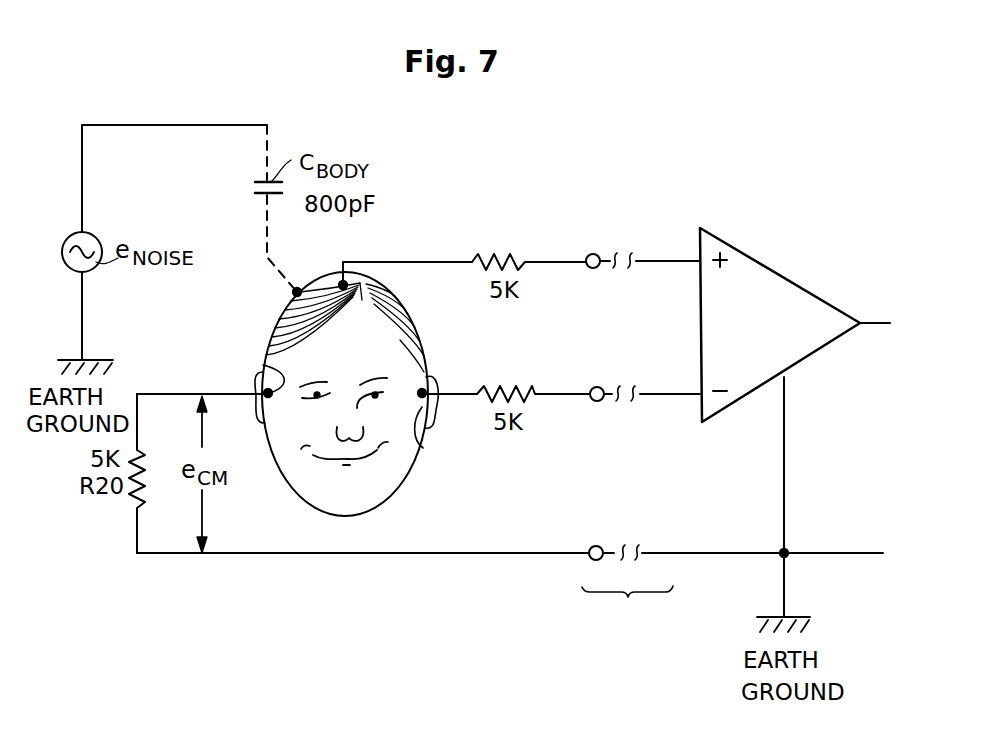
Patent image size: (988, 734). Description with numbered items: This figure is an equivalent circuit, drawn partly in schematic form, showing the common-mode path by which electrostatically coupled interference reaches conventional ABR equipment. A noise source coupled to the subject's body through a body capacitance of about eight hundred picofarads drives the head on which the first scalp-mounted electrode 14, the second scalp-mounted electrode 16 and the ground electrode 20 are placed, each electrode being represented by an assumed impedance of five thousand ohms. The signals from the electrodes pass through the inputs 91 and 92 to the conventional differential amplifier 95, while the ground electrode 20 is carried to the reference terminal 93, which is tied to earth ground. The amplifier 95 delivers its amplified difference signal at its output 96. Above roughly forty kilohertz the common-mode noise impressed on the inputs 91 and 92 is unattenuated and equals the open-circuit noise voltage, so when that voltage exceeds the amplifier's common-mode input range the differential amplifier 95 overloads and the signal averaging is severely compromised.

The first scalp-mounted electrode 14 is at (423, 448).
The second scalp-mounted electrode 16 is at (300, 291).
The ground electrode 20 is at (262, 376).
The input 91 is at (593, 254).
The input terminal 92 is at (595, 387).
The reference terminal 93 is at (596, 546).
The differential amplifier 95 is at (806, 229).
The output 96 is at (870, 318).